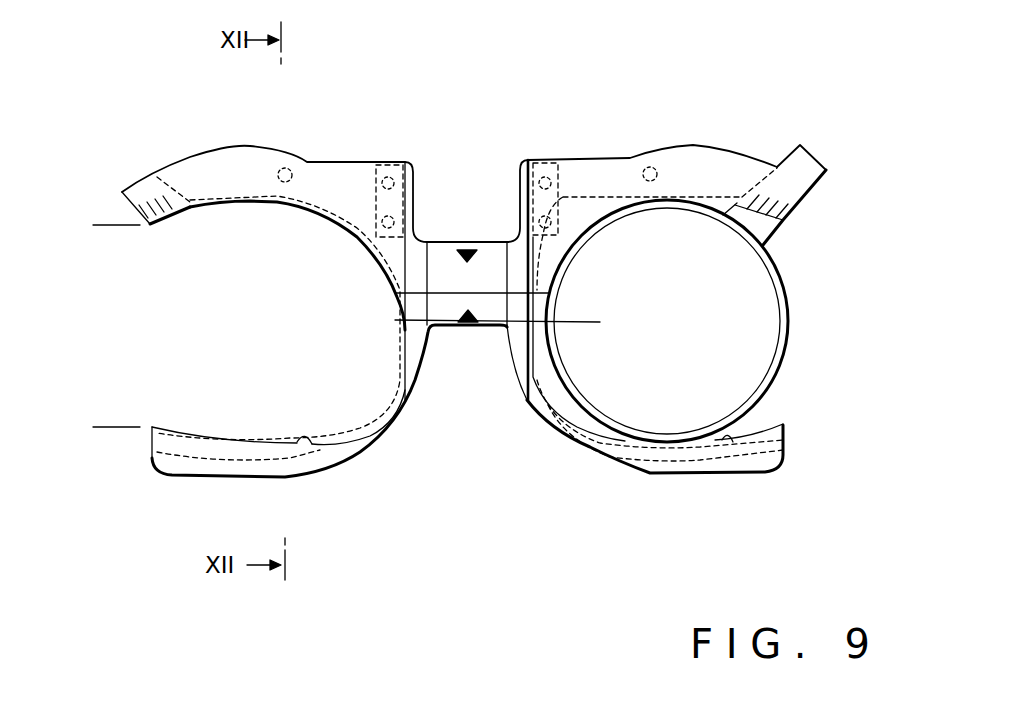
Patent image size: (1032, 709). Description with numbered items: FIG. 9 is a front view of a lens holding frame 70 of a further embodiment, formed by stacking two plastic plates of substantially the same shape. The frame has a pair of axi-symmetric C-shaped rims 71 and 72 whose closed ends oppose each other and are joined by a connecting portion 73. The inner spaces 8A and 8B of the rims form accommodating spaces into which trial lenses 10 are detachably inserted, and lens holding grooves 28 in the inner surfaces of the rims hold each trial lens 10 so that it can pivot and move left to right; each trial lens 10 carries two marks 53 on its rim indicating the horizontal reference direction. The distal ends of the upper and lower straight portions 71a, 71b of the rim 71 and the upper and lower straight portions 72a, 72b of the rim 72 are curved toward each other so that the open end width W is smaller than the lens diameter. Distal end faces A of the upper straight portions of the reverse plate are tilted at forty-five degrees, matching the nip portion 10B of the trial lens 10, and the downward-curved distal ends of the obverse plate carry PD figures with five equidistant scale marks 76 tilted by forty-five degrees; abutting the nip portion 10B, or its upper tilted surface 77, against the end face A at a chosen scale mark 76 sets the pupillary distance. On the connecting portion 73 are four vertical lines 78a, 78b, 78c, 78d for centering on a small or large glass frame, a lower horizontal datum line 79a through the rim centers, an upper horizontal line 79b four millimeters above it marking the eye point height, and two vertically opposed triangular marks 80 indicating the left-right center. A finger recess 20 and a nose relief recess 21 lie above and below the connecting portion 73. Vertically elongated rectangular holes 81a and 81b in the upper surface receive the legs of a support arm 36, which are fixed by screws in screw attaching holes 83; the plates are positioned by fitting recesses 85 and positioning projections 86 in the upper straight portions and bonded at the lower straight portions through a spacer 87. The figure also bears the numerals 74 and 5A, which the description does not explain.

The lens holding frame 70 is at (713, 62).
The rim 71 is at (628, 158).
The upper straight portion of rim 71 71a is at (603, 150).
The lower straight portion of rim 71 71b is at (677, 473).
The rim 72 is at (327, 160).
The upper straight portion of rim 72 72a is at (203, 152).
The lower straight portion of rim 72 72b is at (250, 478).
The connecting portion 73 is at (496, 250).
The groove 74 is at (148, 165).
The scale marks 76 is at (165, 208).
The upper tilted surface of nip portion 77 is at (797, 147).
The vertical line 78a is at (510, 242).
The vertical line 78b is at (431, 242).
The vertical line 78c is at (530, 380).
The vertical line 78d is at (418, 378).
The lower horizontal line 79a is at (493, 330).
The upper horizontal line 79b is at (440, 330).
The triangular marks 80 is at (473, 255).
The rectangular hole 81a is at (567, 165).
The rectangular hole 81b is at (377, 163).
The screw attaching holes 83 is at (378, 217).
The fitting recesses 85 is at (283, 168).
The positioning projections 86 is at (471, 126).
The spacer 87 is at (677, 457).
The recess 20 is at (457, 243).
The nose relief recess 21 is at (478, 330).
The lens holding groove 28 is at (738, 503).
The support arm 36 is at (467, 198).
The marks 53 is at (828, 338).
The lens surface 5A is at (768, 298).
The inner space of rim 71 8A is at (757, 422).
The inner space of rim 72 8B is at (327, 403).
The trial lens 10 is at (803, 380).
The nip portion 10B is at (823, 167).
The distal end face A is at (128, 207).
The open end width W is at (112, 231).